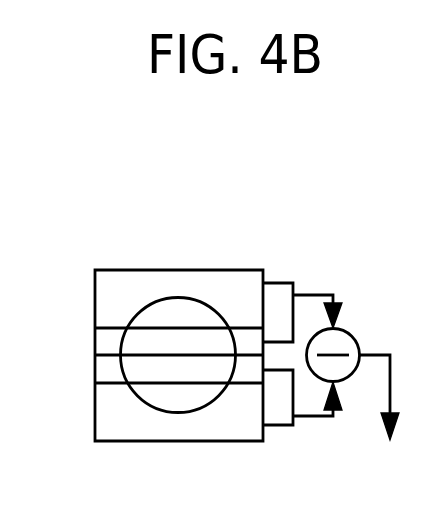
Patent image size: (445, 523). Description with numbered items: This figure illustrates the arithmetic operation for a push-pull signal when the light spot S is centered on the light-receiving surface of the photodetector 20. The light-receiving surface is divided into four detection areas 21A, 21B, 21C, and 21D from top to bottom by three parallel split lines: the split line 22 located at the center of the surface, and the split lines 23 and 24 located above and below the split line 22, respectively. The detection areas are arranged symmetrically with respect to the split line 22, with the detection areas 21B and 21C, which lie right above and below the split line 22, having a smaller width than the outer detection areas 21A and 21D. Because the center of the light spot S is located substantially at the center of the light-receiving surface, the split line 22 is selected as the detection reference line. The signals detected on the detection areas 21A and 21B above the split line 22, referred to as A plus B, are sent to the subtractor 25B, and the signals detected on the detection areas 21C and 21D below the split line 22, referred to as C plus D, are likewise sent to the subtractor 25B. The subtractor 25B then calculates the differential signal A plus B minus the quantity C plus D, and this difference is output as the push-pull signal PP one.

The photodetector 20 is at (208, 270).
The detection area 21A is at (128, 286).
The detection area 21B is at (250, 340).
The detection area 21C is at (248, 372).
The detection area 21D is at (115, 422).
The split line 22 is at (106, 355).
The split line 23 is at (106, 384).
The split line 24 is at (110, 327).
The subtractor 25B is at (356, 341).
The light spot S is at (155, 408).